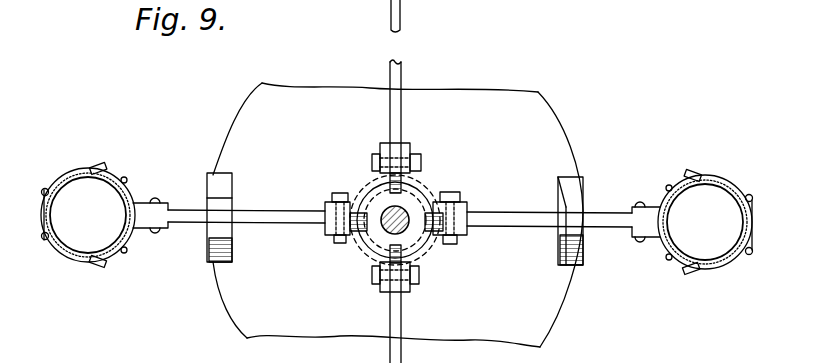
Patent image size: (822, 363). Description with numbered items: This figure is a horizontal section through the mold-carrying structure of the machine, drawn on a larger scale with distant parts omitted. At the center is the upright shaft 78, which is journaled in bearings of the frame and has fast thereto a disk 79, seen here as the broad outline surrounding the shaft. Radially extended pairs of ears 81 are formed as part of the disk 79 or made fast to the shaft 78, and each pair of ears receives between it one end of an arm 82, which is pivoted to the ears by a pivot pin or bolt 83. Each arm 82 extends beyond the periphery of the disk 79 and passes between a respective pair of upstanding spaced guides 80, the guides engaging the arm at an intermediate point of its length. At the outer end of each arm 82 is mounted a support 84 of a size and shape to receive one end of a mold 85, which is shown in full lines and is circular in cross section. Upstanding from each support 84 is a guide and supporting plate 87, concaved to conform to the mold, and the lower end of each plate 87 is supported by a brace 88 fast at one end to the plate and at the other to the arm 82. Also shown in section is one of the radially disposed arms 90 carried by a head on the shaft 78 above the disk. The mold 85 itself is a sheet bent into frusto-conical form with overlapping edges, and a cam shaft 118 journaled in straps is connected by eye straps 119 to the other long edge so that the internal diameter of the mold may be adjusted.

The upright shaft 78 is at (388, 227).
The disk 79 is at (398, 215).
The guides 80 is at (214, 230).
The ears 81 is at (413, 171).
The arm 82 is at (401, 119).
The pivot pin or bolt 83 is at (421, 275).
The support 84 is at (74, 264).
The mold 85 is at (102, 255).
The guide and supporting plate 87 is at (116, 176).
The brace 88 is at (100, 265).
The radially disposed arms 90 is at (400, 13).
The cam shaft 118 is at (42, 198).
The eye straps 119 is at (42, 230).